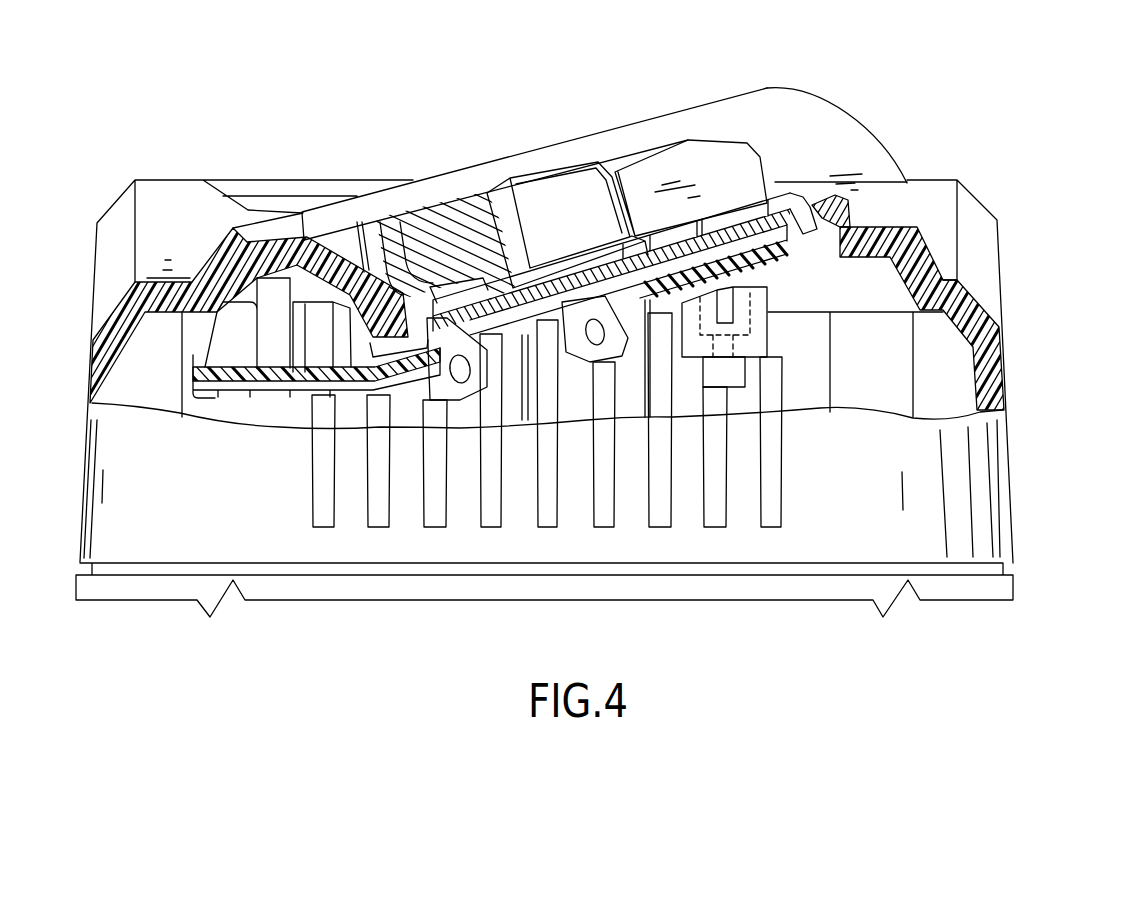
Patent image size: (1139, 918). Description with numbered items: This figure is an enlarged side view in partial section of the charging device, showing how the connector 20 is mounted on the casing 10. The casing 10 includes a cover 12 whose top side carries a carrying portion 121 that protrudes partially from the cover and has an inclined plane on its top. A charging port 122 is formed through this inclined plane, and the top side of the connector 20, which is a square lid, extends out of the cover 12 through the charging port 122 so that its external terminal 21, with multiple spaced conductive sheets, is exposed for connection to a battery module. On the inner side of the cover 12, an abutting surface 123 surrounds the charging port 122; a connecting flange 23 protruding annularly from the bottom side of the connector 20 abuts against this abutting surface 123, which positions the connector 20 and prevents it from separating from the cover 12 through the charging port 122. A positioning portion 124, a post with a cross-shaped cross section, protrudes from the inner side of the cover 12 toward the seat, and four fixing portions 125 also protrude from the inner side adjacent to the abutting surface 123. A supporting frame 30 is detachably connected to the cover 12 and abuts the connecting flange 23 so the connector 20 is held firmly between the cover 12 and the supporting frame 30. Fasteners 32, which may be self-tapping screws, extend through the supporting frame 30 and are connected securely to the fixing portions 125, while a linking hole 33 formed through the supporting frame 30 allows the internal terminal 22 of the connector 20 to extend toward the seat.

The casing 10 is at (1056, 350).
The cover 12 is at (1027, 493).
The carrying portion 121 is at (803, 113).
The charging port 122 is at (400, 290).
The abutting surface 123 is at (840, 225).
The positioning portion 124 is at (253, 332).
The fixing portions 125 is at (740, 313).
The connector 20 is at (472, 188).
The external terminal 21 is at (557, 190).
The internal terminal 22 is at (575, 325).
The connecting flange 23 is at (815, 237).
The supporting frame 30 is at (242, 397).
The fasteners 32 is at (733, 370).
The linking hole 33 is at (450, 310).